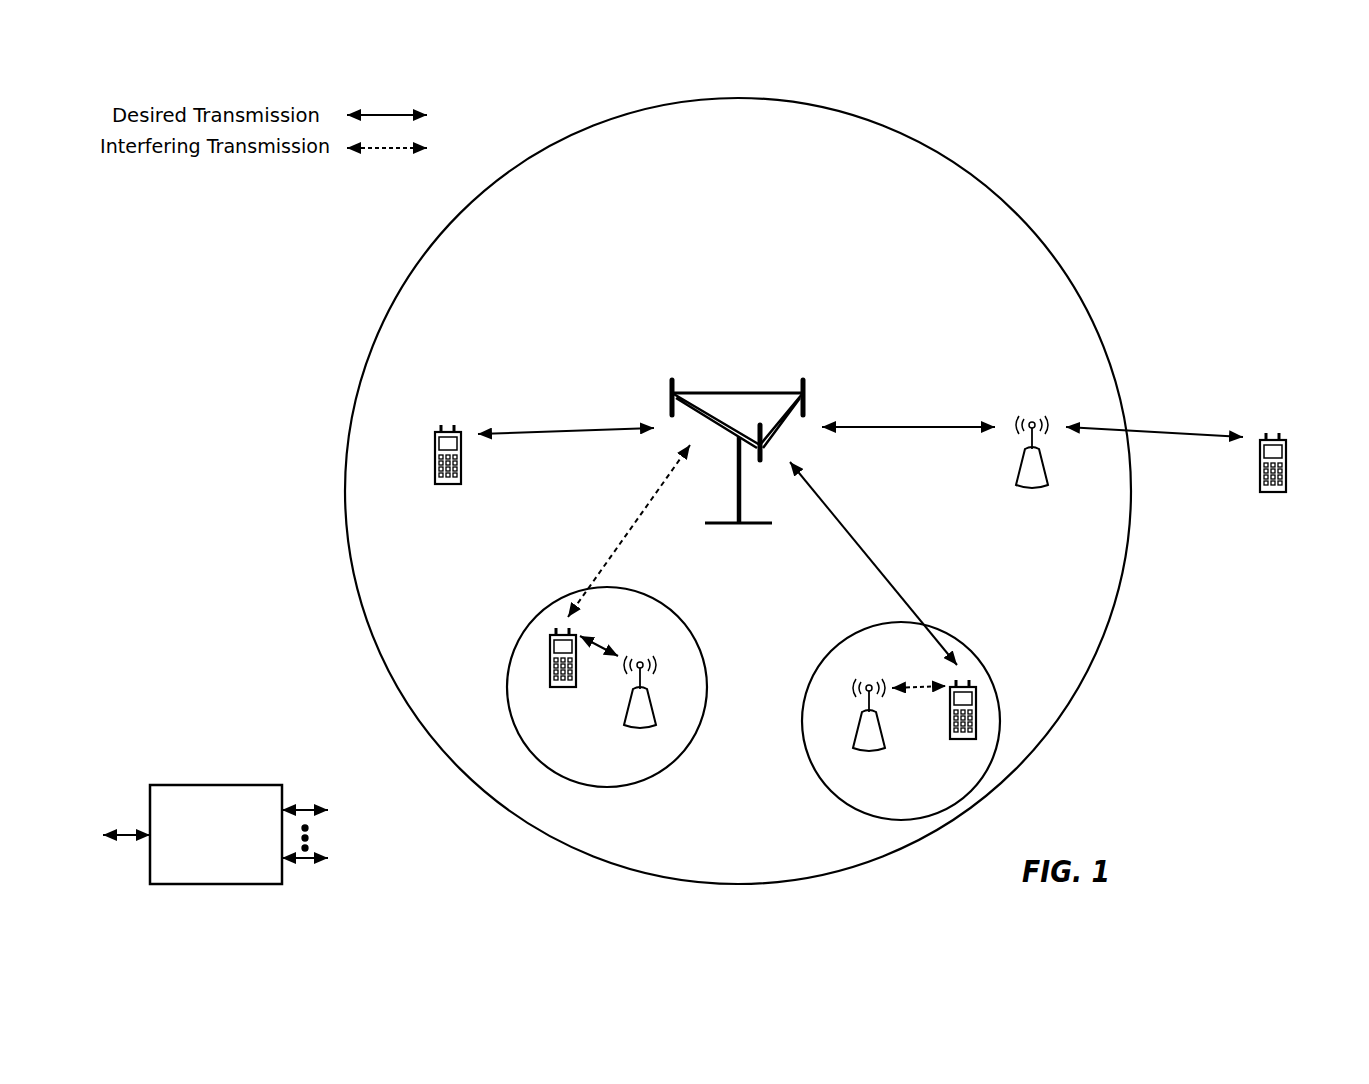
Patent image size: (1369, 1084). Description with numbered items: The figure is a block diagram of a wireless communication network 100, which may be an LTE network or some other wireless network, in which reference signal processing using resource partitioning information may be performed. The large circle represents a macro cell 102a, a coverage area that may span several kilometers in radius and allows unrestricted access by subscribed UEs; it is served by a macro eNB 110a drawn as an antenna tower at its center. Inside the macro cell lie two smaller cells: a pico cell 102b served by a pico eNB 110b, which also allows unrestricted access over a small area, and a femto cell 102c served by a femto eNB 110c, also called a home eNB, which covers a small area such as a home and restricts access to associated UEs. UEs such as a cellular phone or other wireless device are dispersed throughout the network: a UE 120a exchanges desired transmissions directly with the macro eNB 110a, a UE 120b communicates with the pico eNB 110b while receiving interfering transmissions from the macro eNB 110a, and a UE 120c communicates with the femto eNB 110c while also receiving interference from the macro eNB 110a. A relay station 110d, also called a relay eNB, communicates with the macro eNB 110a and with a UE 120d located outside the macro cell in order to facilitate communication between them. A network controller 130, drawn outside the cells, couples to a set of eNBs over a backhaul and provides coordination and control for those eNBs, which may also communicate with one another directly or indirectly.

The wireless communication network 100 is at (1200, 160).
The macro cell 102a is at (1000, 197).
The pico cell 102b is at (682, 623).
The femto cell 102c is at (828, 653).
The macro eNB 110a is at (735, 392).
The pico eNB 110b is at (667, 703).
The femto eNB 110c is at (856, 736).
The relay station 110d is at (1033, 421).
The UE 120a is at (435, 444).
The UE 120b is at (550, 680).
The UE 120c is at (950, 730).
The UE 120d is at (1287, 452).
The network controller 130 is at (208, 785).